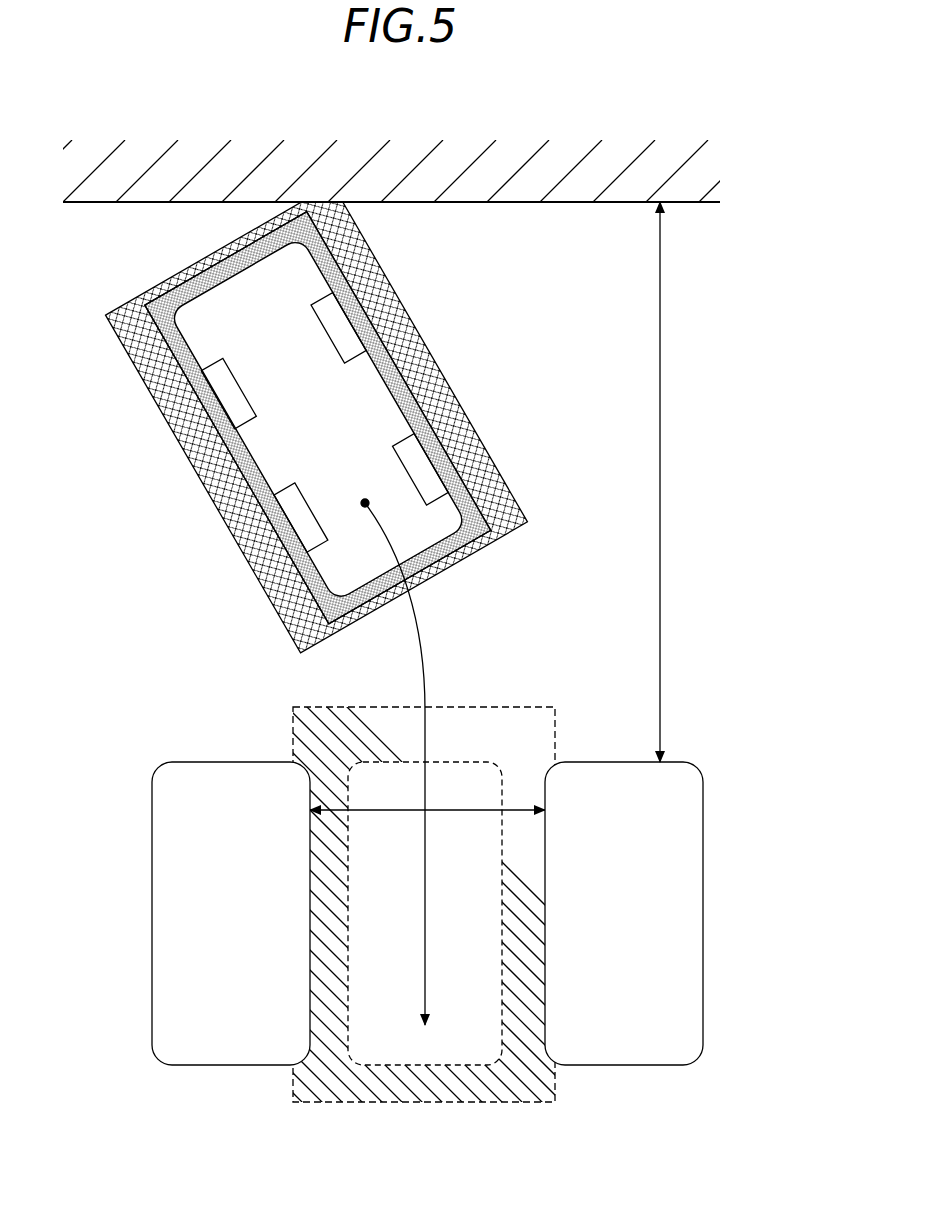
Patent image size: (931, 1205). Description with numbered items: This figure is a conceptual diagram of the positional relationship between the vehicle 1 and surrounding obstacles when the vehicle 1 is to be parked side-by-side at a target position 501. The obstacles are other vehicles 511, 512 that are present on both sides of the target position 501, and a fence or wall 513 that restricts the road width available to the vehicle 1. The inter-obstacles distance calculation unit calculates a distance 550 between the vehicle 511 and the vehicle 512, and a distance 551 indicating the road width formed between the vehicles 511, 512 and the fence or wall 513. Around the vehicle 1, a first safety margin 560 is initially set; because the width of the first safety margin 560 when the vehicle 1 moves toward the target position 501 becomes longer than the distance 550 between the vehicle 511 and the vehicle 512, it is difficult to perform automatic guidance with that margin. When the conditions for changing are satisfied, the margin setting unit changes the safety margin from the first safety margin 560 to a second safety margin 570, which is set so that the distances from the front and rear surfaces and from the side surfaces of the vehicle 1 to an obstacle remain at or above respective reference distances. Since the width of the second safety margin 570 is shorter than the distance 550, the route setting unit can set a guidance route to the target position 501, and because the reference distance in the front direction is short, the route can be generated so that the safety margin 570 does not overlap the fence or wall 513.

The vehicle 1 is at (383, 377).
The target position 501 is at (462, 1065).
The vehicle 511 is at (230, 762).
The vehicle 512 is at (618, 760).
The fence or wall 513 is at (552, 205).
The distance 550 is at (519, 808).
The distance 551 is at (660, 295).
The first safety margin 560 is at (505, 482).
The second safety margin 570 is at (455, 462).